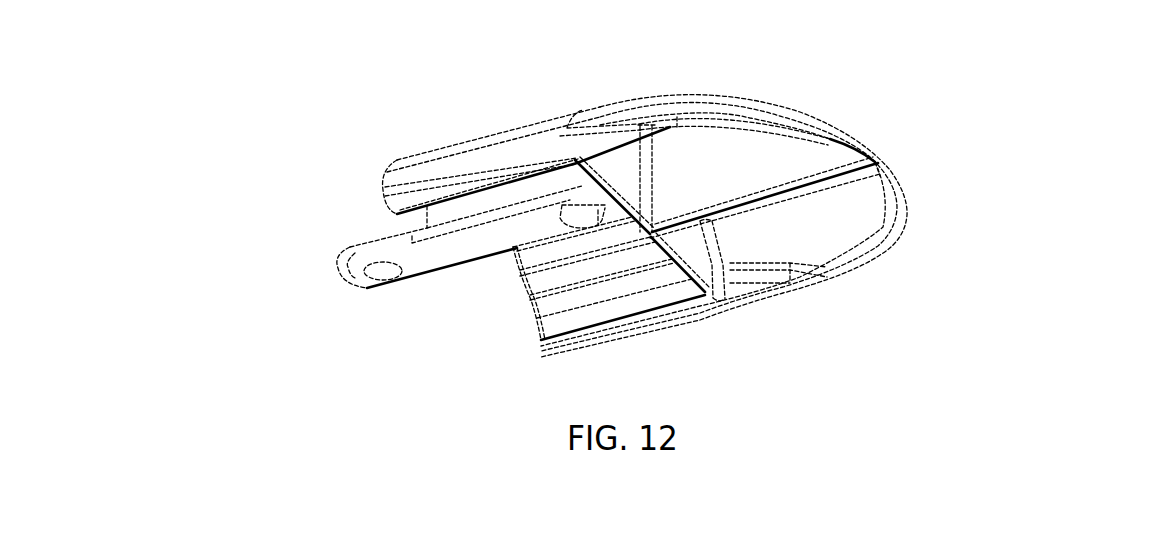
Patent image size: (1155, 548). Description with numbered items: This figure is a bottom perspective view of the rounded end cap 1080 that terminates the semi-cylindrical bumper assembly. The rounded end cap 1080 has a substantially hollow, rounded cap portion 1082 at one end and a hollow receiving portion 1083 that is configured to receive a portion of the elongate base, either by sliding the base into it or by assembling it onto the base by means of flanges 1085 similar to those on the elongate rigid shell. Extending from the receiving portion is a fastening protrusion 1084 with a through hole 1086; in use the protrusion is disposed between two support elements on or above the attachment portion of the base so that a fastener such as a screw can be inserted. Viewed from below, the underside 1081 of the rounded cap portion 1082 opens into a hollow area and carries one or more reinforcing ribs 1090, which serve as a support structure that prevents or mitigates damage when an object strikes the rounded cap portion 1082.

The rounded end cap 1080 is at (940, 140).
The underside 1081 is at (747, 157).
The rounded cap portion 1082 is at (780, 115).
The hollow receiving portion 1083 is at (542, 277).
The fastening protrusion 1084 is at (337, 267).
The flanges 1085 is at (425, 211).
The through hole 1086 is at (380, 268).
The reinforcing ribs 1090 is at (713, 203).